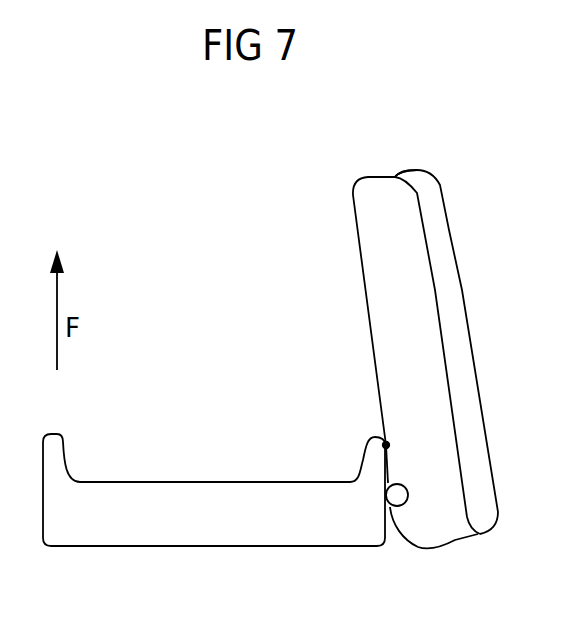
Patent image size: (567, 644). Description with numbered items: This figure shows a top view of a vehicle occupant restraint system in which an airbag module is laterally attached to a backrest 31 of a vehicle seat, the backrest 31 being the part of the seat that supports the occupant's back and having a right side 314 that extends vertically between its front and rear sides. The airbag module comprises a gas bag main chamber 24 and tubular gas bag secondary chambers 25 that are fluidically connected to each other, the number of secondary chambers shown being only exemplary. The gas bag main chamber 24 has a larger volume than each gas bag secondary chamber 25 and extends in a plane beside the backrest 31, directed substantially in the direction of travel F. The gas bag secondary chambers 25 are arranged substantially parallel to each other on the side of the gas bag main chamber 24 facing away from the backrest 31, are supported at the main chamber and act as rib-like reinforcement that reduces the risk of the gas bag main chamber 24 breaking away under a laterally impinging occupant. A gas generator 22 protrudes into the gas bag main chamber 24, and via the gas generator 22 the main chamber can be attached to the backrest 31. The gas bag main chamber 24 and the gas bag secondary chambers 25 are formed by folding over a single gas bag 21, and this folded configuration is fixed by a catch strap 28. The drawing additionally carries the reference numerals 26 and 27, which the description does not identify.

The gas bag 21 is at (423, 548).
The gas generator 22 is at (395, 498).
The gas bag main chamber 24 is at (378, 272).
The gas bag secondary chamber 25 is at (450, 288).
The upper end of backrest 26 is at (408, 177).
The pivot point 27 is at (385, 443).
The catch strap 28 is at (462, 539).
The backrest 31 is at (227, 530).
The right side 314 is at (385, 473).